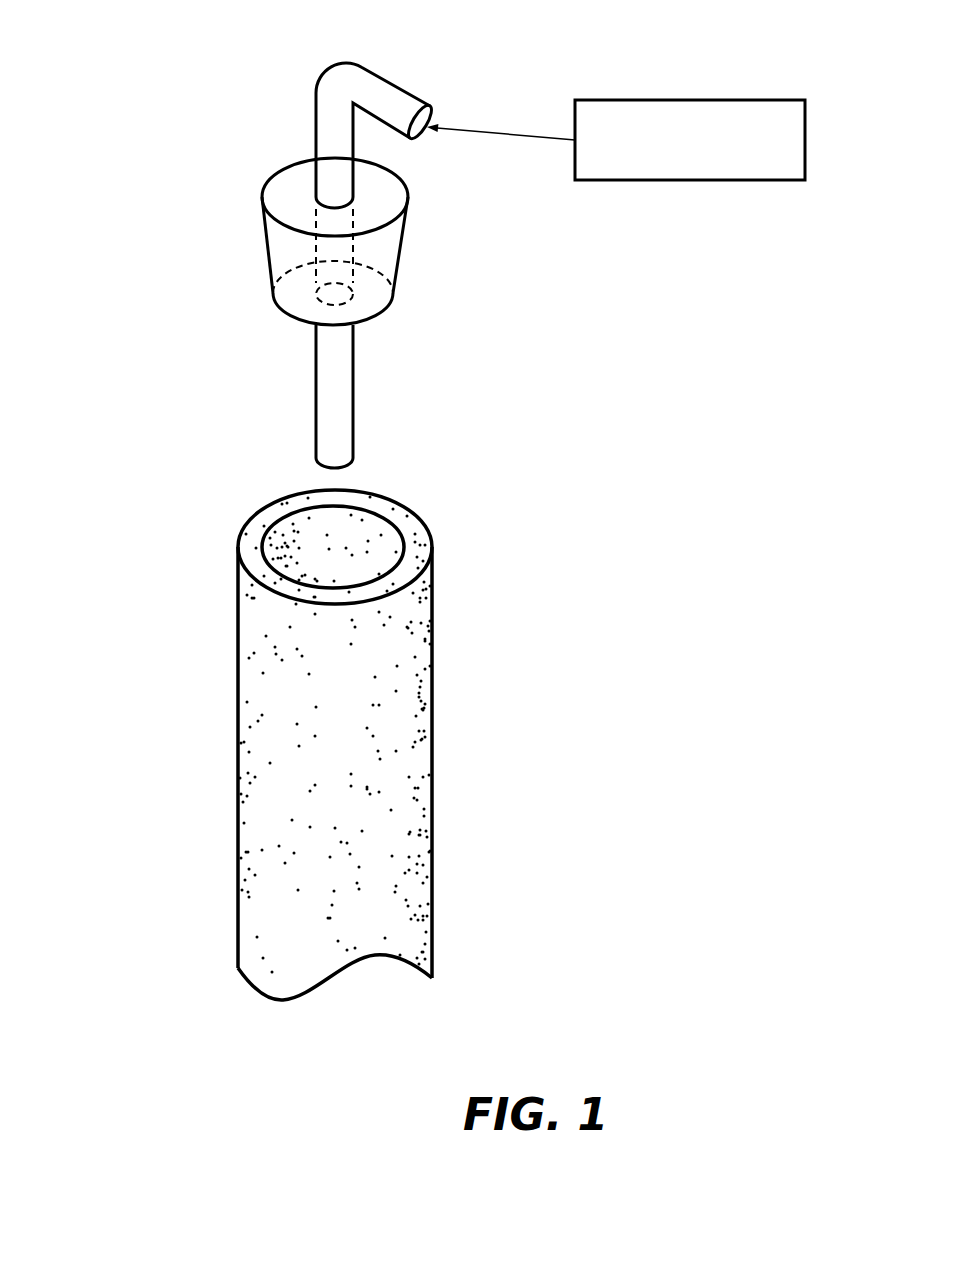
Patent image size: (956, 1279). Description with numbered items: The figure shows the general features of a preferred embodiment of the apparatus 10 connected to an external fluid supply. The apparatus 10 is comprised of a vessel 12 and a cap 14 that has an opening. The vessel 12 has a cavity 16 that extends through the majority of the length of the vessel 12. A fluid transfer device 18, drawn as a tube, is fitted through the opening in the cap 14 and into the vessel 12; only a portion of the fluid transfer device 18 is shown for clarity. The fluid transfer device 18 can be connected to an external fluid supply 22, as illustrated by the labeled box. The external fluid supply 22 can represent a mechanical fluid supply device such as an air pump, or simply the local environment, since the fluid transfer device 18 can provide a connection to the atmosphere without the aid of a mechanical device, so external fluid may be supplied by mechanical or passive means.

The apparatus 10 is at (112, 267).
The vessel 12 is at (403, 663).
The cap 14 is at (405, 238).
The cavity 16 is at (367, 525).
The fluid transfer device 18 is at (388, 82).
The external fluid supply 22 is at (732, 100).